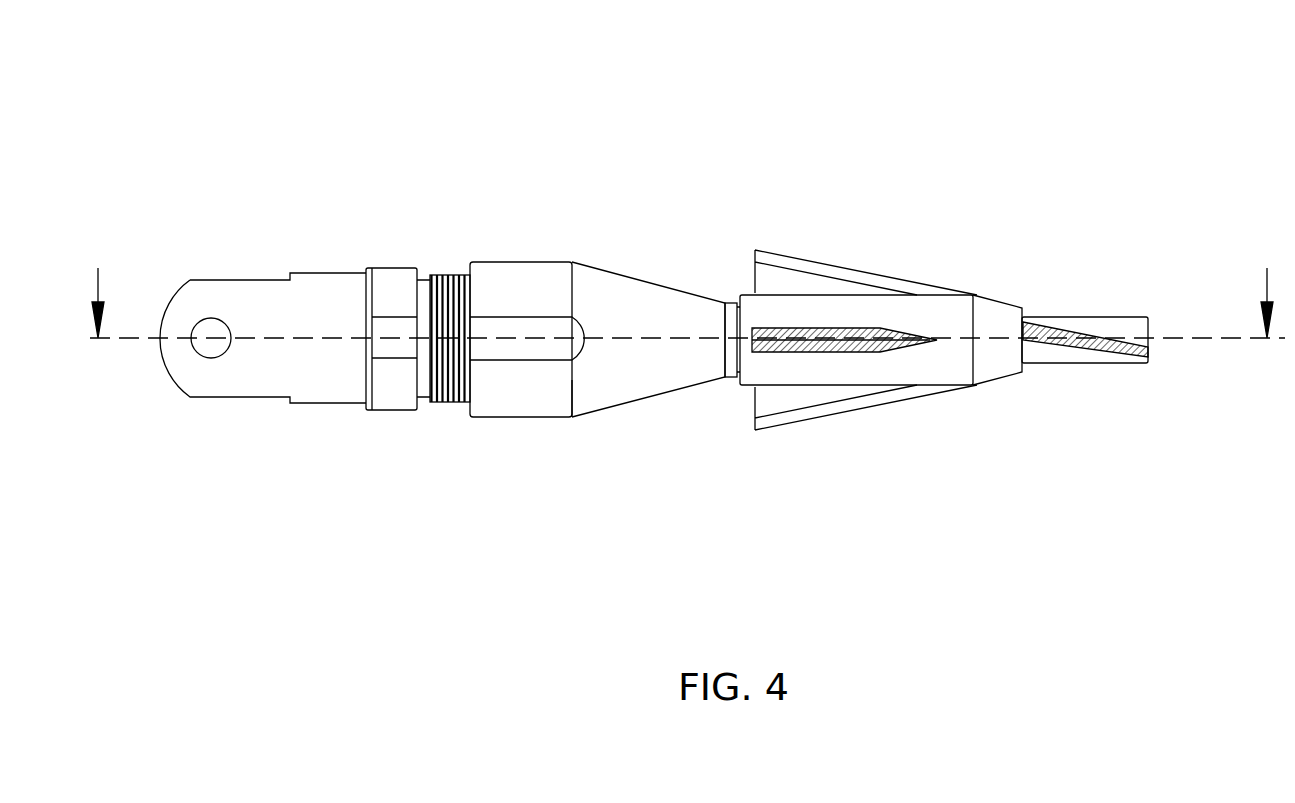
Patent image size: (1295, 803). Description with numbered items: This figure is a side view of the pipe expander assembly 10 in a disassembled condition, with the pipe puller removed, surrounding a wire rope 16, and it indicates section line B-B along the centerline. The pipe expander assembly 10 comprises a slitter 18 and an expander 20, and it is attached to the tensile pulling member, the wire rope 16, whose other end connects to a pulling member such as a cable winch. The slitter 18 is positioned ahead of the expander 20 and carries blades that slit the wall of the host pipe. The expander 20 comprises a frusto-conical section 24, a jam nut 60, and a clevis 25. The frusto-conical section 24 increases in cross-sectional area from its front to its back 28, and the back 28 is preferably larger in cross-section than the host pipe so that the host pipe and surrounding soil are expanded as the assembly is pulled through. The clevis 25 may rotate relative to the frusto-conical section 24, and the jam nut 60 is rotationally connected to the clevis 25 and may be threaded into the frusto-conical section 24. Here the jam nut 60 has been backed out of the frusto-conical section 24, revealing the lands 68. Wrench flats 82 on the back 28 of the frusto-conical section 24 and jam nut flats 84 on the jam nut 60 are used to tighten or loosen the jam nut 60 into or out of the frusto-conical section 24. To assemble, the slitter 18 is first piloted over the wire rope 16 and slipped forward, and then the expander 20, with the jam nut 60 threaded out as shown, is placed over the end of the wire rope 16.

The pipe expander assembly 10 is at (715, 107).
The wire rope 16 is at (1065, 363).
The slitter 18 is at (895, 237).
The expander 20 is at (513, 477).
The frusto-conical section 24 is at (637, 277).
The clevis 25 is at (262, 280).
The back 28 is at (572, 417).
The jam nut 60 is at (387, 290).
The lands 68 is at (445, 403).
The wrench flats 82 is at (498, 327).
The jam nut flats 84 is at (393, 347).